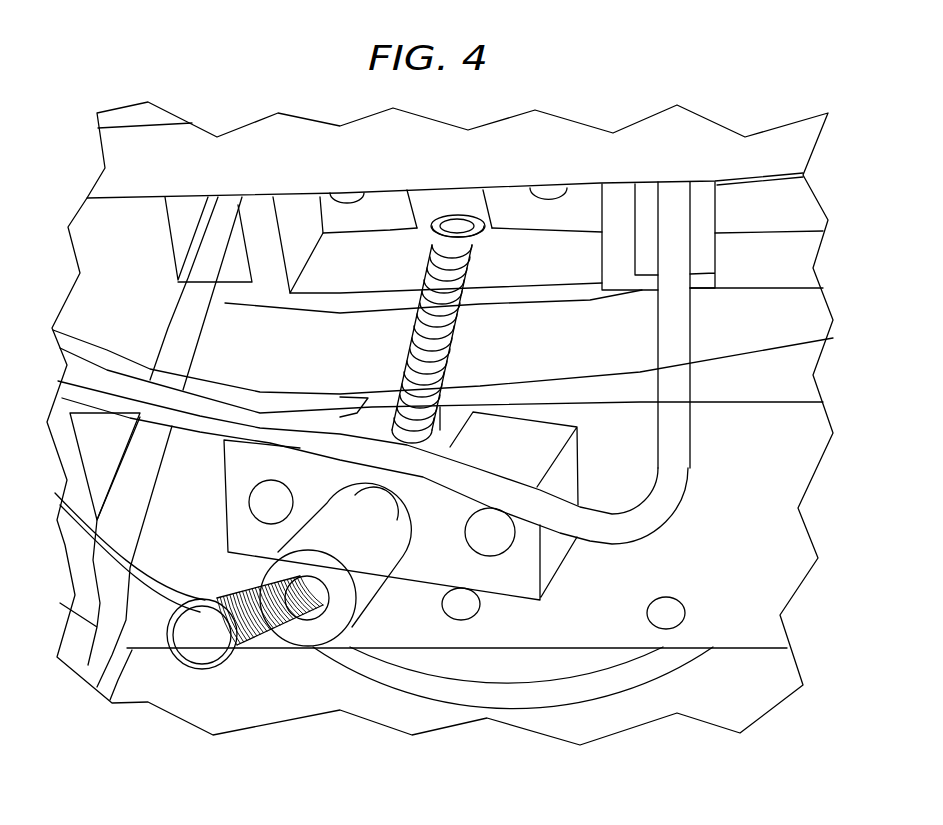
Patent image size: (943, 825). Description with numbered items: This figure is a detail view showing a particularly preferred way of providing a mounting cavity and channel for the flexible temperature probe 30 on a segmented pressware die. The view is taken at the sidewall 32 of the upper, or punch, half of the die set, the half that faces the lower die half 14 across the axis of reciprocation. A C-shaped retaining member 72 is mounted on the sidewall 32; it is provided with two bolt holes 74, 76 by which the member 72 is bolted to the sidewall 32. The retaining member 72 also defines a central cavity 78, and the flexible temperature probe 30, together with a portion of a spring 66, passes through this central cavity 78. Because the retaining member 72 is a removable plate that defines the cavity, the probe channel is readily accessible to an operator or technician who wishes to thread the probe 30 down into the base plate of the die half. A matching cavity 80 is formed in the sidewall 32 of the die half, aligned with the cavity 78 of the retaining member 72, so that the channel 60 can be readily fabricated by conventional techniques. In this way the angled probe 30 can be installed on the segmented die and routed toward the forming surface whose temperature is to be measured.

The lower die half 14 is at (387, 218).
The flexible temperature probe 30 is at (137, 570).
The sidewall 32 is at (744, 259).
The channel 60 is at (482, 237).
The spring 66 is at (412, 338).
The C-shaped retaining member 72 is at (409, 543).
The bolt hole 74 is at (294, 497).
The bolt hole 76 is at (466, 543).
The central cavity 78 is at (452, 423).
The matching cavity 80 is at (460, 202).